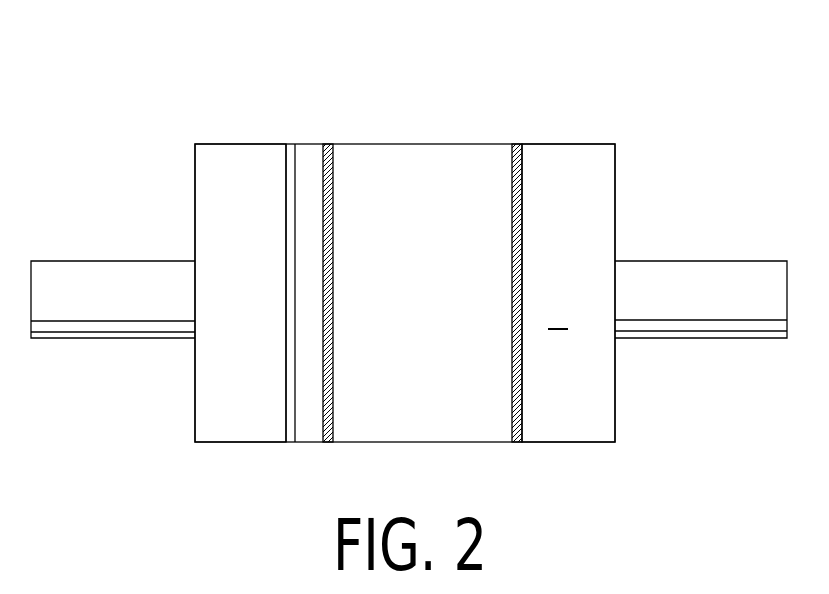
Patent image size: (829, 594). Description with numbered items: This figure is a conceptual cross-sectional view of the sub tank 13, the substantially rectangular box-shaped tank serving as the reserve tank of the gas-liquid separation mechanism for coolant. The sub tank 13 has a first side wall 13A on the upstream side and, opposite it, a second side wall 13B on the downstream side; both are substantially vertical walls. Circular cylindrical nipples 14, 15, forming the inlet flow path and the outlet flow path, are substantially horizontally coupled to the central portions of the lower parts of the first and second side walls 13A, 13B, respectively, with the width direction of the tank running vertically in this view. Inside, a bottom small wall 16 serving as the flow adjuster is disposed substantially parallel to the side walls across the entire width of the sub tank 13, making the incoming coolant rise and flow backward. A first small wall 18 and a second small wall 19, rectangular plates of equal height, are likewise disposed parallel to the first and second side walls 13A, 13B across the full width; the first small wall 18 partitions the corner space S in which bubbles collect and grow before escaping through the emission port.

The sub tank 13 is at (405, 256).
The first side wall 13A is at (615, 203).
The second side wall 13B is at (195, 175).
The nipple 14 is at (737, 261).
The nipple 15 is at (122, 262).
The bottom small wall 16 is at (284, 368).
The first small wall 18 is at (510, 195).
The second small wall 19 is at (334, 380).